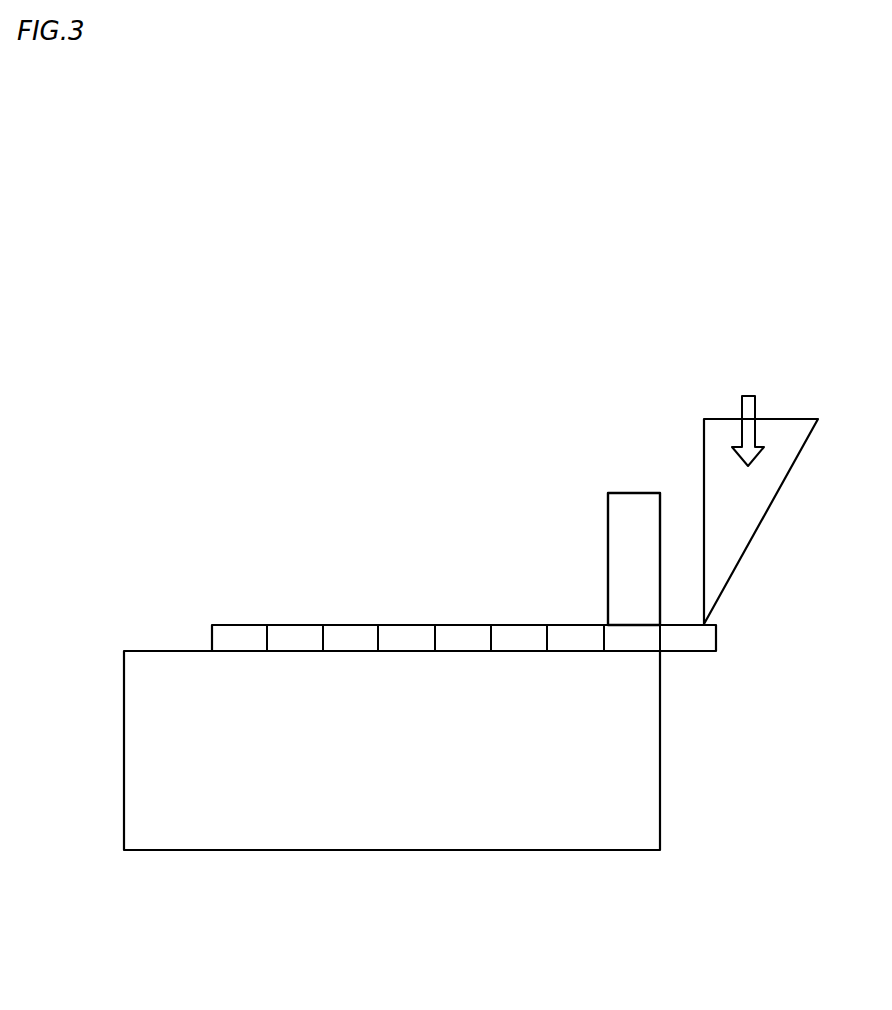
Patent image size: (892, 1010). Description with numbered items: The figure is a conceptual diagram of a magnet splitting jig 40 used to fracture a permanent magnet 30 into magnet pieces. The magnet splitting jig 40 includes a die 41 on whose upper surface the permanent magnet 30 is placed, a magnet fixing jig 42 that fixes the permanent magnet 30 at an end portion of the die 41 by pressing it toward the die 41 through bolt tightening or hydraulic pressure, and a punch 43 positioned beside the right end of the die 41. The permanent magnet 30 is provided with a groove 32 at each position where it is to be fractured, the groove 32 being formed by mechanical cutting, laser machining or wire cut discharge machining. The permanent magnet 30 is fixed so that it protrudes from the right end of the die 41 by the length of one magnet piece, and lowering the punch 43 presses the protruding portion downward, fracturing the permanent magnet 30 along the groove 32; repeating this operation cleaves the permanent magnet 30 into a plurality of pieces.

The permanent magnet 30 is at (464, 568).
The groove 32 is at (322, 625).
The magnet splitting jig 40 is at (678, 457).
The die 41 is at (643, 762).
The magnet fixing jig 42 is at (637, 493).
The punch 43 is at (787, 440).